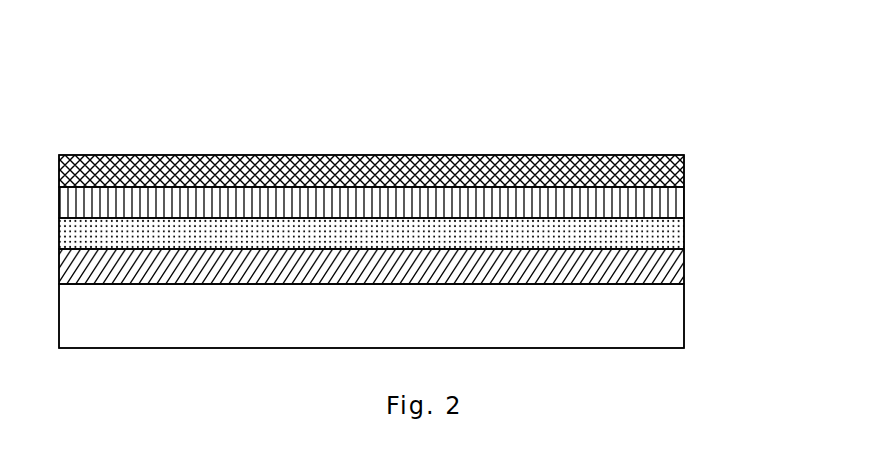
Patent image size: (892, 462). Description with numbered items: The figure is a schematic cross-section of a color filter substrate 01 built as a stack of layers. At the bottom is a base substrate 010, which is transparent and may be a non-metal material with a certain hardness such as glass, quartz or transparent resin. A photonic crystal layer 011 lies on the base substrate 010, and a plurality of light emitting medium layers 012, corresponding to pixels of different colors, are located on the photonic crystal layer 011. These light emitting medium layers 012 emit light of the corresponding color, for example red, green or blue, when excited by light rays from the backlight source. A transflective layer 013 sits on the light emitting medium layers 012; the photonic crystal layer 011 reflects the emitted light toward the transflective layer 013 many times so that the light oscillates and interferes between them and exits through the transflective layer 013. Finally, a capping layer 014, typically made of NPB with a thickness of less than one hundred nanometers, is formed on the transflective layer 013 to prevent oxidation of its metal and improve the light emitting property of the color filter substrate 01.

The color filter substrate 01 is at (385, 142).
The base substrate 010 is at (657, 315).
The photonic crystal layer 011 is at (658, 268).
The light emitting medium layer 012 is at (655, 234).
The transflective layer 013 is at (657, 203).
The capping layer 014 is at (653, 173).